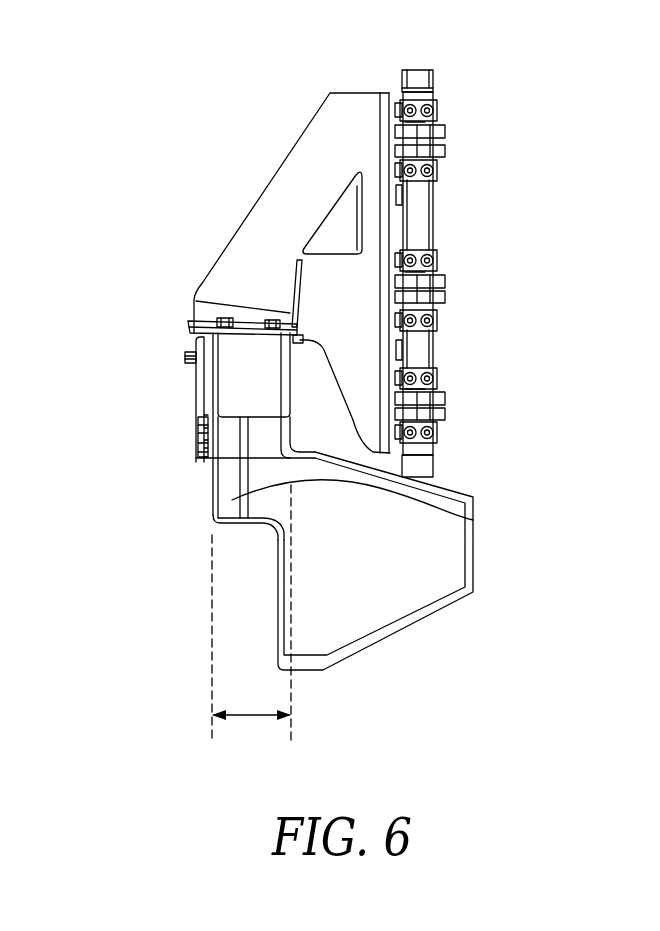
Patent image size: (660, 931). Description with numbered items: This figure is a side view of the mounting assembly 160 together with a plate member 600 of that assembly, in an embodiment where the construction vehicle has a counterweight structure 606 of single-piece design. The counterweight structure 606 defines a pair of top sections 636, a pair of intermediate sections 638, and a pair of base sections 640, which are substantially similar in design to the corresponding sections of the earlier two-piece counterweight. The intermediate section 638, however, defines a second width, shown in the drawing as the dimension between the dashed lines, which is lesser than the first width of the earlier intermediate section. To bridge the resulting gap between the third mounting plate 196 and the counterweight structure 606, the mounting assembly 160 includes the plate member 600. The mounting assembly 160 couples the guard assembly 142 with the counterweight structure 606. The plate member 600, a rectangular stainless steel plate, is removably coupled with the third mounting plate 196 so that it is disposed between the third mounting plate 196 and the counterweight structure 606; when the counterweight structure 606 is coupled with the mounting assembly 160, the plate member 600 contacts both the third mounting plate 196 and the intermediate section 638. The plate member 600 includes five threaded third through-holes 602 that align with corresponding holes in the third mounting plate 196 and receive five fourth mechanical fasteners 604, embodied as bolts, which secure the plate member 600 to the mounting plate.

The guard assembly 142 is at (498, 96).
The mounting assembly 160 is at (187, 375).
The third mounting plate 196 is at (200, 392).
The plate member 600 is at (193, 427).
The third through-holes 602 is at (193, 415).
The fourth mechanical fasteners 604 is at (185, 438).
The counterweight structure 606 is at (513, 557).
The top sections 636 is at (245, 427).
The intermediate sections 638 is at (445, 512).
The base sections 640 is at (348, 587).